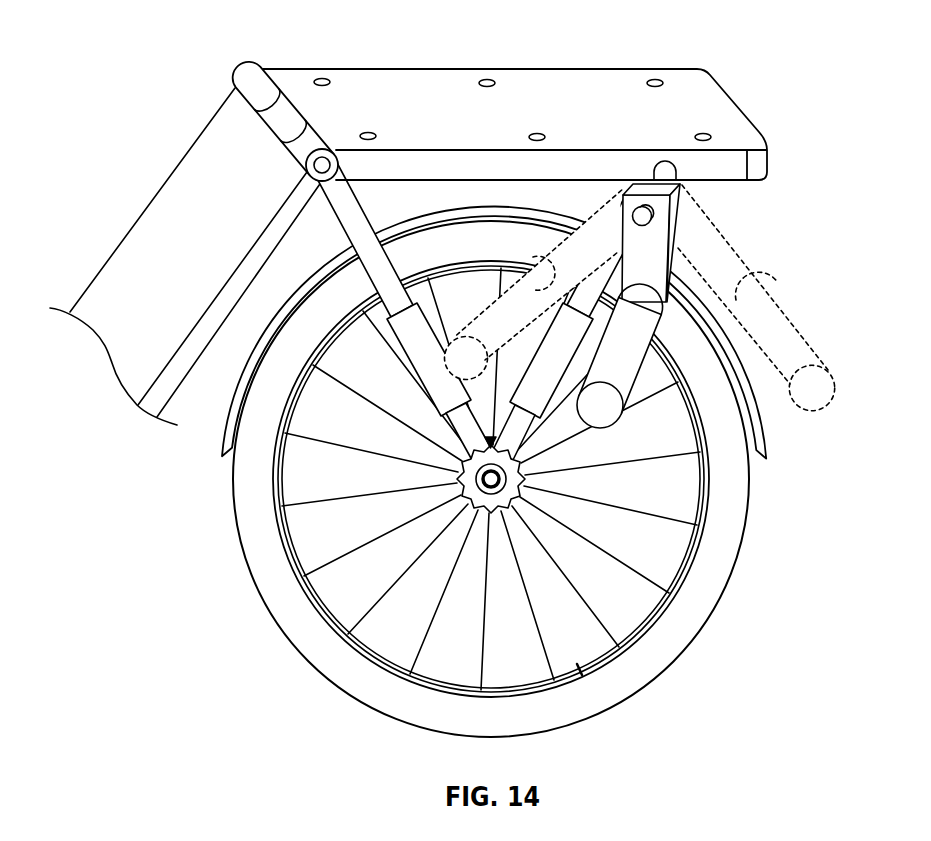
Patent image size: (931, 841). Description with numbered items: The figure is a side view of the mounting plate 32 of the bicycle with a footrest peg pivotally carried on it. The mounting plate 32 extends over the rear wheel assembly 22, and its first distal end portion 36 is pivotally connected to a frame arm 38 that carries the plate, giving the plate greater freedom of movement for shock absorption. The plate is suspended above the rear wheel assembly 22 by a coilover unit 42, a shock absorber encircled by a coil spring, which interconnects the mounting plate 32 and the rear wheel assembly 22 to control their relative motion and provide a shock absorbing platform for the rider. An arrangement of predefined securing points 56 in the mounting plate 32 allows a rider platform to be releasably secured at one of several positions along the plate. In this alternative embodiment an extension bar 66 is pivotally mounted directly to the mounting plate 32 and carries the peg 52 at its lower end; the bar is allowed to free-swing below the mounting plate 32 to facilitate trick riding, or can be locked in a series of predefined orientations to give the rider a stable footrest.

The rear wheel assembly 22 is at (250, 535).
The mounting plate 32 is at (608, 69).
The first distal end portion 36 is at (289, 78).
The frame arm 38 is at (138, 242).
The coilover unit 42 is at (517, 442).
The peg 52 is at (629, 373).
The predefined securing points 56 is at (333, 82).
The extension bar 66 is at (682, 312).